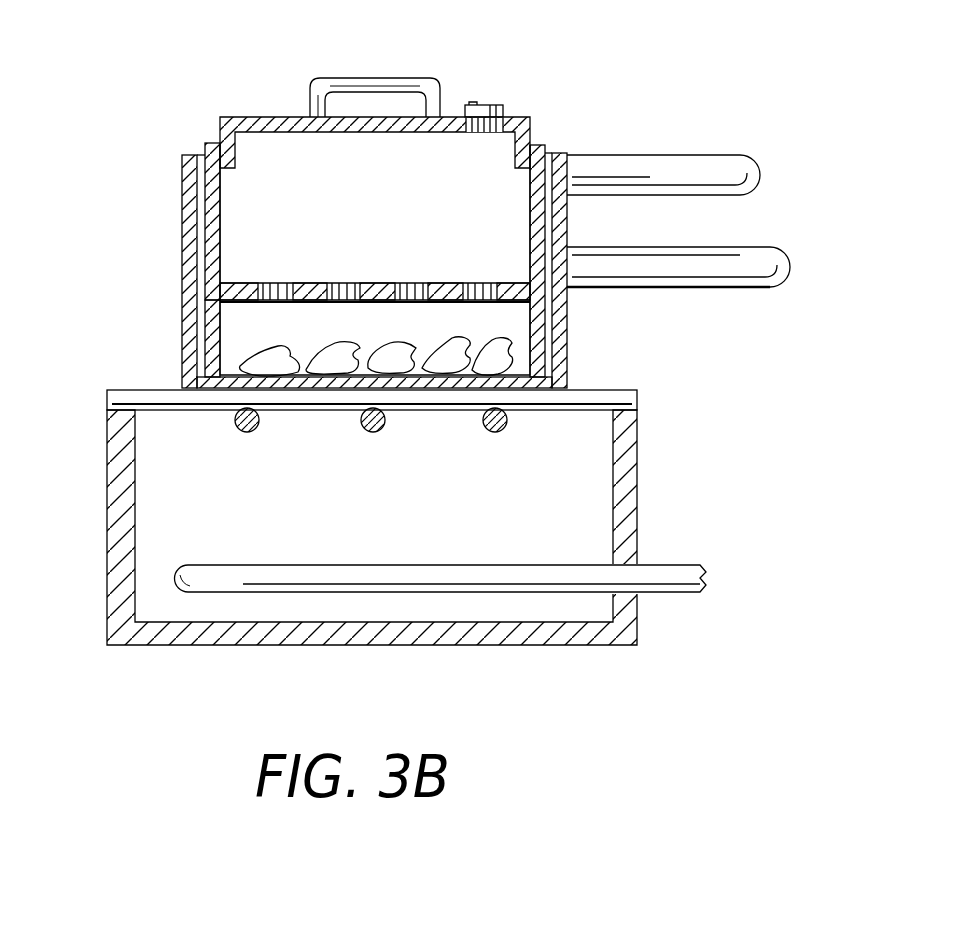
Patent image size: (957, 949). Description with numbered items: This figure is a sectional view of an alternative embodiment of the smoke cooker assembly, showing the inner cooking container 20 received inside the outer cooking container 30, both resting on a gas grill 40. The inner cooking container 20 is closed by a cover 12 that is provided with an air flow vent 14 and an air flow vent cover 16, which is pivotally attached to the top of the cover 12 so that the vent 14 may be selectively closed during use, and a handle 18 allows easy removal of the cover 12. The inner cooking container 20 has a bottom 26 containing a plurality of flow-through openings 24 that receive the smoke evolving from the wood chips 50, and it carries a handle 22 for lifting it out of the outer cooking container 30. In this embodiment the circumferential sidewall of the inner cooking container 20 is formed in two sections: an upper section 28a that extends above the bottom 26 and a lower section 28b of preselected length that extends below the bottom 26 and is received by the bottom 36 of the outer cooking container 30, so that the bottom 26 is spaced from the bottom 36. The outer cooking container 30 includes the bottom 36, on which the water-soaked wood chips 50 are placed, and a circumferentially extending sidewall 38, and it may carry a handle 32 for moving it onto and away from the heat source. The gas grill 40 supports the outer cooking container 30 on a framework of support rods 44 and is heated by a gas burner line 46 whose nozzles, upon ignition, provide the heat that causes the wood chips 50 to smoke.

The cover 12 is at (520, 117).
The air flow vent 14 is at (490, 132).
The air flow vent cover 16 is at (492, 107).
The handle 18 is at (335, 78).
The inner cooking container 20 is at (547, 222).
The handle 22 is at (697, 162).
The openings 24 is at (485, 283).
The bottom 26 is at (222, 266).
The upper sidewall section 28a is at (205, 223).
The lower sidewall section 28b is at (207, 334).
The outer cooking container 30 is at (568, 312).
The handle 32 is at (765, 267).
The bottom 36 is at (293, 388).
The sidewall 38 is at (182, 177).
The gas grill 40 is at (638, 473).
The support rods 44 is at (640, 398).
The gas burner line 46 is at (665, 563).
The wood chips 50 is at (507, 357).